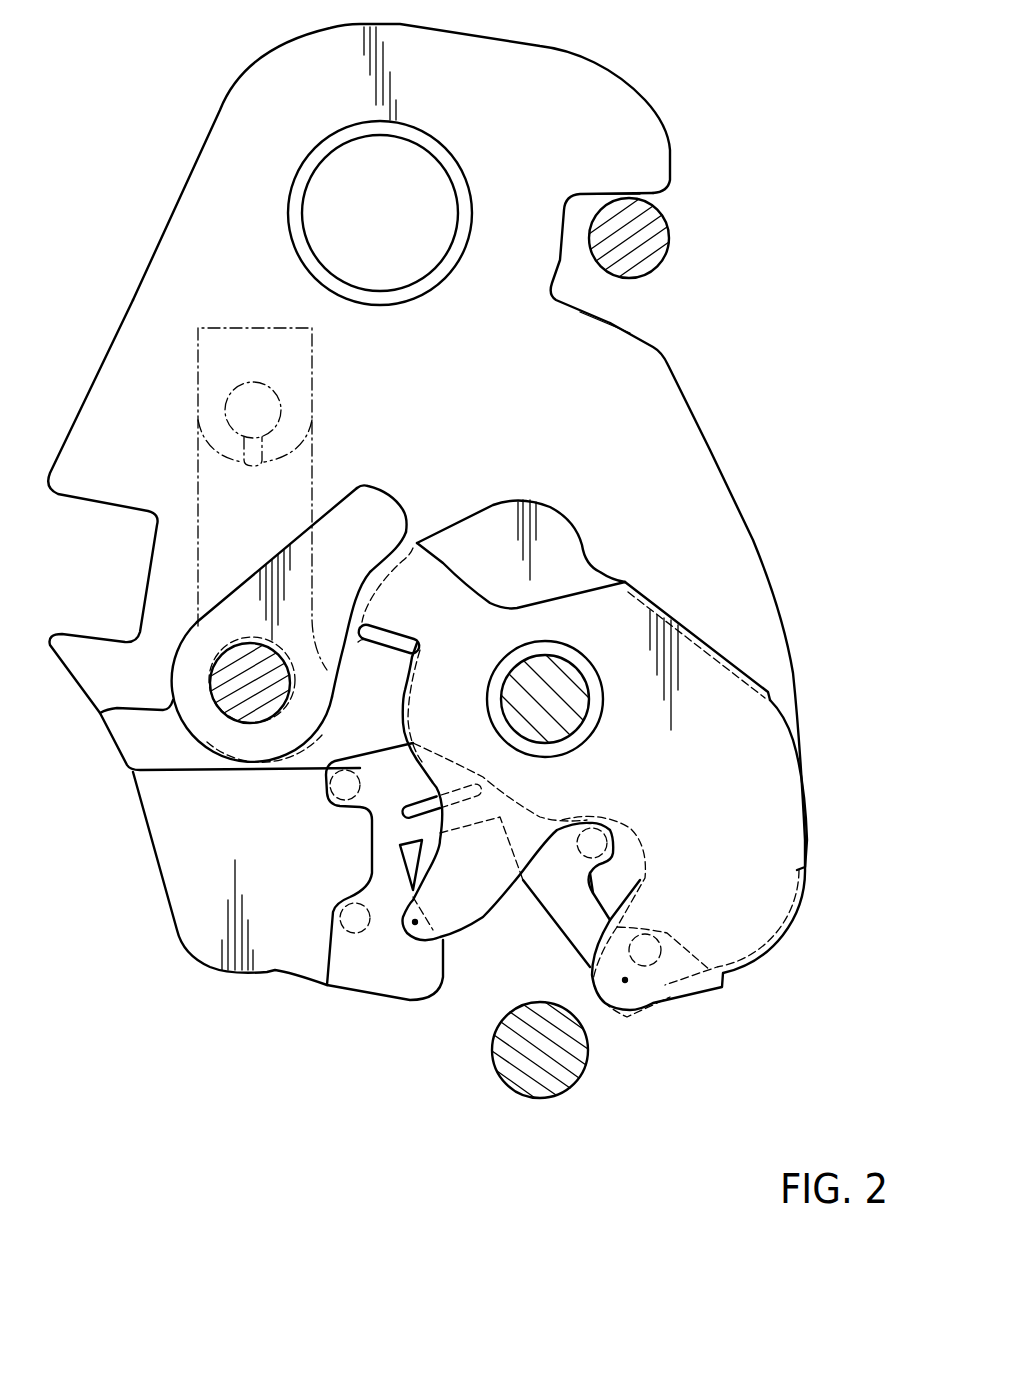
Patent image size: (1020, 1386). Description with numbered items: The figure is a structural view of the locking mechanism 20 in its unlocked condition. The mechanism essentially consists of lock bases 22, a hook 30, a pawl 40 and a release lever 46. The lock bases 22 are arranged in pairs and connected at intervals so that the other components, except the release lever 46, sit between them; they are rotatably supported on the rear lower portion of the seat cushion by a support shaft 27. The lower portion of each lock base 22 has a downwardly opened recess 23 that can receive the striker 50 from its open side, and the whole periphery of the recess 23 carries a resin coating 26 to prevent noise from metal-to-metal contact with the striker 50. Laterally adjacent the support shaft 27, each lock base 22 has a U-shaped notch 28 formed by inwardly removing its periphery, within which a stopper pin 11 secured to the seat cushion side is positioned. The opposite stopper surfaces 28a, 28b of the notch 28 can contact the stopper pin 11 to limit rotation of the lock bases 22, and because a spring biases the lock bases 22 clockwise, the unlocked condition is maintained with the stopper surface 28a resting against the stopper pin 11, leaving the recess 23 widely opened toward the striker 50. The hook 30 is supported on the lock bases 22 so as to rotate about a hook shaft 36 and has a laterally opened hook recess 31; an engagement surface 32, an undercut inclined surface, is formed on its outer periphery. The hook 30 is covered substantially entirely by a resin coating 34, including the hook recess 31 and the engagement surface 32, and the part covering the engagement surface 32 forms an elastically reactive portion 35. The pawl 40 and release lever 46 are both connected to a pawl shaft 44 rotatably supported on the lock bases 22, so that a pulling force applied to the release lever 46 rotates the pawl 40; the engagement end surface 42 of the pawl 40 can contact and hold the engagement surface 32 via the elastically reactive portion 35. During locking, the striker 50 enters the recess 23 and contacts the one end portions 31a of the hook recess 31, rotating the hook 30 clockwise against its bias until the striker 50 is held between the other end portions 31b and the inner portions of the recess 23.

The locking mechanism 20 is at (108, 290).
The lock bases 22 is at (683, 440).
The support shaft 27 is at (330, 207).
The notch 28 is at (560, 250).
The stopper surface 28a is at (622, 200).
The stopper surface 28b is at (612, 322).
The stopper pin 11 is at (633, 250).
The release lever 46 is at (230, 492).
The pawl 40 is at (237, 607).
The engagement end surface 42 is at (398, 497).
The pawl shaft 44 is at (213, 700).
The hook 30 is at (703, 632).
The engagement surface 32 is at (390, 646).
The resin coating 34 is at (693, 692).
The elastically reactive portion 35 is at (357, 645).
The hook shaft 36 is at (557, 680).
The hook recess 31 is at (623, 830).
The one end portions 31a is at (415, 922).
The other end portions 31b is at (625, 980).
The resin coatings 26 is at (382, 821).
The recesses 23 is at (403, 863).
The striker 50 is at (537, 1078).